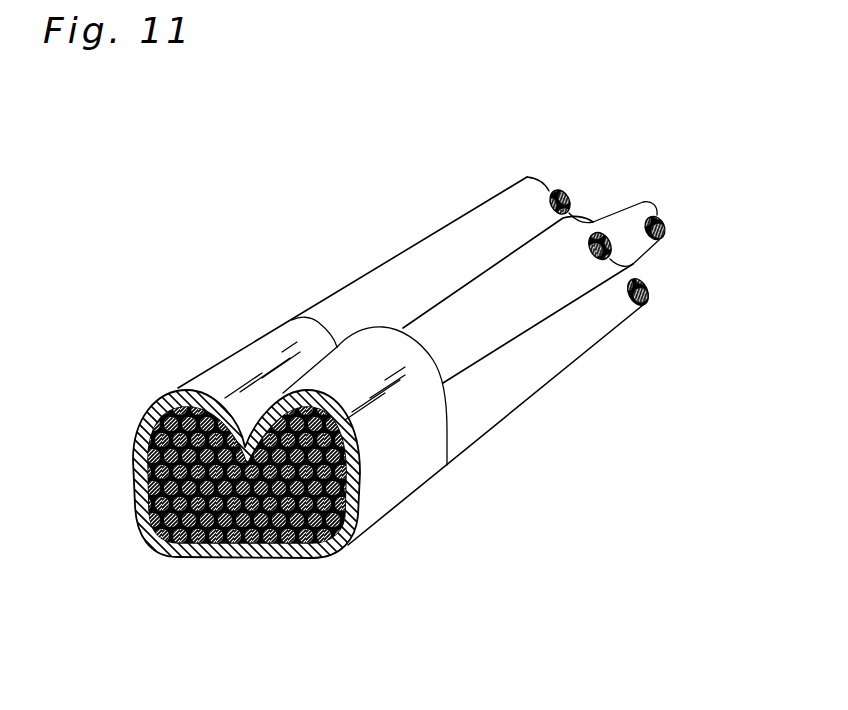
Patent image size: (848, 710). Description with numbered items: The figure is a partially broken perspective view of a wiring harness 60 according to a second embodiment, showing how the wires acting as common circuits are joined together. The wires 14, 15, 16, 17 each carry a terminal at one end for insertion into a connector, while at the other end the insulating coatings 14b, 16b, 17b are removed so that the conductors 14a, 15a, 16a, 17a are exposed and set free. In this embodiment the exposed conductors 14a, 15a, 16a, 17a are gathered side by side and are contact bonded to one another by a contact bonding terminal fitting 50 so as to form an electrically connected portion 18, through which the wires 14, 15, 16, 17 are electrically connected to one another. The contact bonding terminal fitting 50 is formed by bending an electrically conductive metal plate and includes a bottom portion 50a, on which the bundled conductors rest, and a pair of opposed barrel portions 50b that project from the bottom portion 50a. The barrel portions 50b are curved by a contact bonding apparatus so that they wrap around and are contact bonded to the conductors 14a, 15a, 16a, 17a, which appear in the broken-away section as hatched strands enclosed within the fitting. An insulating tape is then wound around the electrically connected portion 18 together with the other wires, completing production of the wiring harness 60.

The wire 14 is at (455, 221).
The conductor 14a is at (140, 494).
The insulating coating 14b is at (405, 285).
The wire 15 is at (637, 217).
The conductor 15a is at (220, 548).
The wire 16 is at (540, 400).
The conductor 16a is at (313, 550).
The insulating coating 16b is at (557, 337).
The wire 17 is at (573, 240).
The conductor 17a is at (352, 466).
The insulating coating 17b is at (557, 268).
The electrically connected portion 18 is at (160, 315).
The contact bonding terminal fitting 50 is at (403, 506).
The bottom portion 50a is at (268, 553).
The barrel portions 50b is at (265, 348).
The wiring harness 60 is at (683, 377).